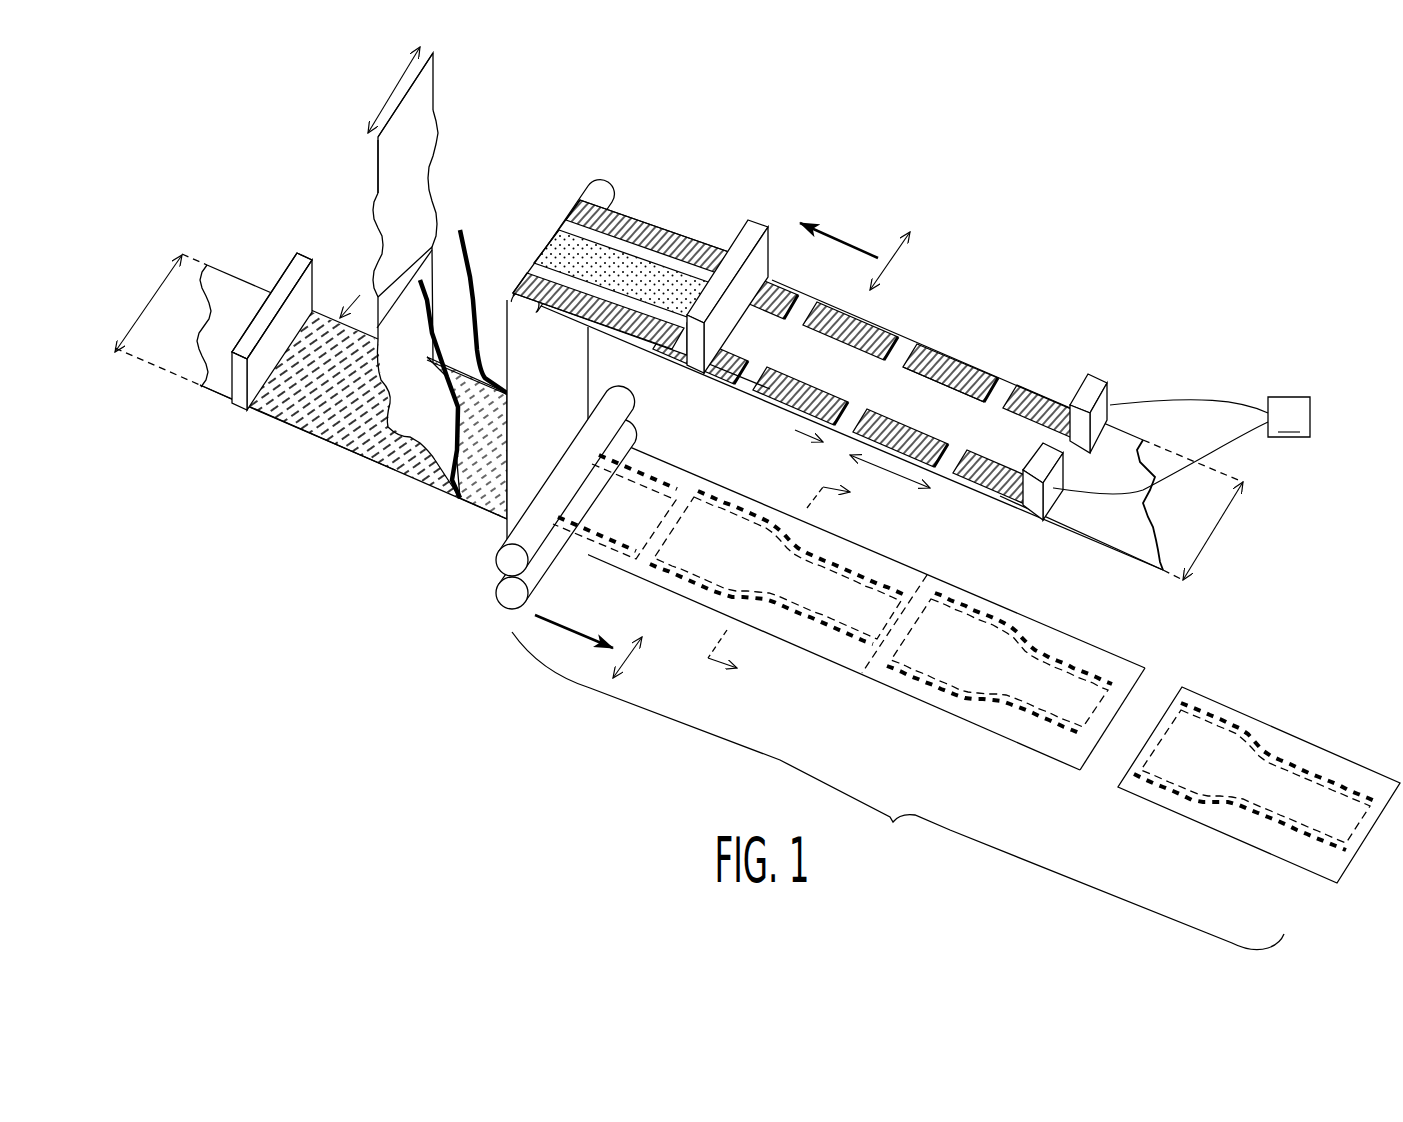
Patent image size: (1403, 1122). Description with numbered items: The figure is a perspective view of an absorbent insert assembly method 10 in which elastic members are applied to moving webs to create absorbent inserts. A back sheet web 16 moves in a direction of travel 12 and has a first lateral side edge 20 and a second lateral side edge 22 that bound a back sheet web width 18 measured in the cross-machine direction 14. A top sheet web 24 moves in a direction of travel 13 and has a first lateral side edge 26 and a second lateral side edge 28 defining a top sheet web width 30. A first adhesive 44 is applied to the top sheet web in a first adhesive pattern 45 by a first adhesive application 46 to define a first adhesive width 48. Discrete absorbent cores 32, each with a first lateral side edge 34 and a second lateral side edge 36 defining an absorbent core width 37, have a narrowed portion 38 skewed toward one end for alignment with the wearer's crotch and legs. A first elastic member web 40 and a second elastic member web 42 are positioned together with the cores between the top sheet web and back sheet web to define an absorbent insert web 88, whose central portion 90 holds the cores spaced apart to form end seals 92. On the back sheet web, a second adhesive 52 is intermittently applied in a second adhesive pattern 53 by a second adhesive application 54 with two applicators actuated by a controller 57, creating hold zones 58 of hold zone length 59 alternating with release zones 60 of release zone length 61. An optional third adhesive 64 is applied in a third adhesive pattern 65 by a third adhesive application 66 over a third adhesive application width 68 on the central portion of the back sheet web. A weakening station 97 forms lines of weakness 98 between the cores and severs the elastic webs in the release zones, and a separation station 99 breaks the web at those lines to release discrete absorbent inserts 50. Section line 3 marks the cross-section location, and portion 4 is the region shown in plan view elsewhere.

The section line 3- 3 is at (789, 586).
The portion of the method 4 is at (898, 791).
The absorbent insert assembly method 10 is at (1232, 272).
The direction of travel 12 is at (838, 242).
The direction of travel 13 is at (572, 629).
The cross-machine direction 14 is at (893, 258).
The back sheet web 16 is at (1145, 560).
The back sheet web width 18 is at (1215, 530).
The first lateral side edge 20 is at (1136, 438).
The second lateral side edge 22 is at (1083, 541).
The top sheet web 24 is at (215, 283).
The first lateral side edge 26 is at (248, 283).
The second lateral side edge 28 is at (218, 403).
The top sheet web width 30 is at (160, 270).
The discrete absorbent cores 32 is at (430, 106).
The first lateral side edge 34 is at (436, 62).
The second lateral side edge 36 is at (378, 165).
The absorbent core width 37 is at (392, 92).
The narrowed portion 38 is at (440, 176).
The first elastic member web 40 is at (473, 268).
The second elastic member web 42 is at (440, 350).
The first adhesive 44 is at (313, 423).
The first adhesive pattern 45 is at (355, 424).
The first adhesive application 46 is at (300, 258).
The first adhesive width 48 is at (287, 430).
The discrete absorbent inserts 50 is at (1310, 717).
The second adhesive 52 is at (963, 353).
The second adhesive pattern 53 is at (634, 233).
The second adhesive application 54 is at (1100, 403).
The controller 57 is at (1181, 445).
The hold zones 58 is at (992, 368).
The hold zone length 59 is at (890, 477).
The release zones 60 is at (797, 296).
The release zone length 61 is at (830, 452).
The third adhesive 64 is at (563, 215).
The third adhesive pattern 65 is at (540, 243).
The third adhesive application 66 is at (766, 228).
The third adhesive application width 68 is at (677, 265).
The absorbent insert web 88 is at (1055, 630).
The central portion 90 is at (645, 513).
The end seals 92 is at (700, 508).
The weakening station 97 is at (930, 572).
The lines of weakness 98 is at (868, 668).
The separation station 99 is at (1167, 673).